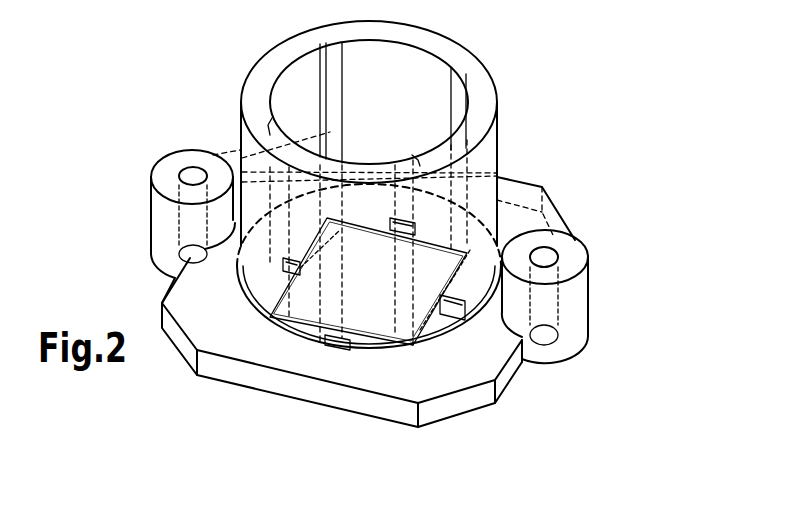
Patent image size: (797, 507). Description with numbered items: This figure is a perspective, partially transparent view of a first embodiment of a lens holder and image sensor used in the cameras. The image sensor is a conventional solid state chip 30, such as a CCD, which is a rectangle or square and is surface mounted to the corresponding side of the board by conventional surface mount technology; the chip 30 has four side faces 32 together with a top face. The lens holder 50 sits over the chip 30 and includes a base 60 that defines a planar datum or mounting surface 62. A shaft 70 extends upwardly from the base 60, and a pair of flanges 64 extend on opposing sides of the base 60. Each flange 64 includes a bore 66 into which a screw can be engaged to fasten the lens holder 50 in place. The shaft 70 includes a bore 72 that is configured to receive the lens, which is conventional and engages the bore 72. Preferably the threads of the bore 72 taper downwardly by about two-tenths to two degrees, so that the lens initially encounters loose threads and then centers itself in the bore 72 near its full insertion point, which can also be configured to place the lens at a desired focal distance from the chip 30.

The chip 30 is at (356, 318).
The side faces 32 is at (287, 250).
The lens holder 50 is at (555, 232).
The base 60 is at (497, 340).
The mounting surface 62 is at (405, 427).
The flanges 64 is at (153, 227).
The bores 66 is at (193, 173).
The shaft 70 is at (497, 137).
The bore 72 is at (392, 77).